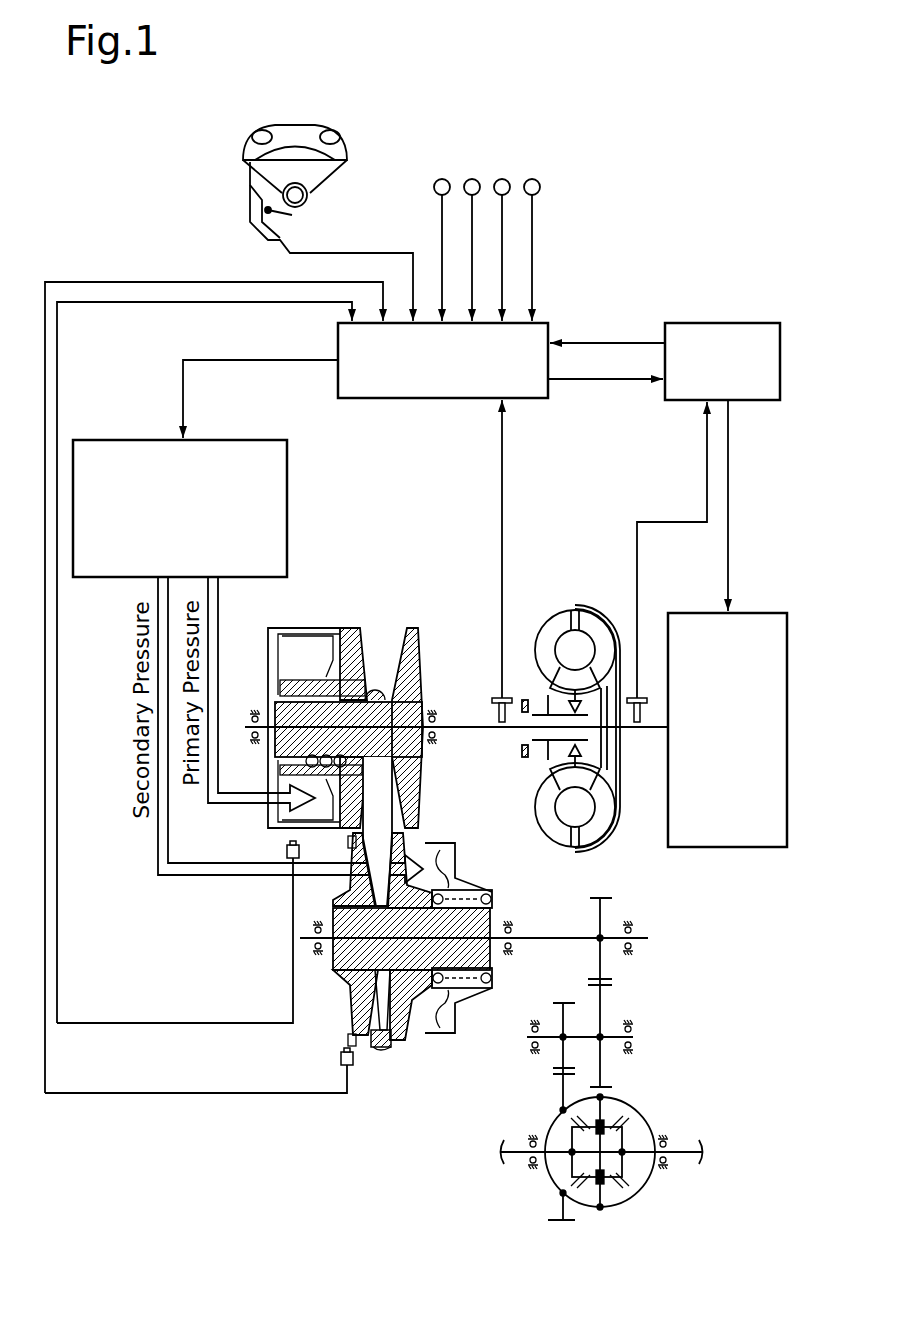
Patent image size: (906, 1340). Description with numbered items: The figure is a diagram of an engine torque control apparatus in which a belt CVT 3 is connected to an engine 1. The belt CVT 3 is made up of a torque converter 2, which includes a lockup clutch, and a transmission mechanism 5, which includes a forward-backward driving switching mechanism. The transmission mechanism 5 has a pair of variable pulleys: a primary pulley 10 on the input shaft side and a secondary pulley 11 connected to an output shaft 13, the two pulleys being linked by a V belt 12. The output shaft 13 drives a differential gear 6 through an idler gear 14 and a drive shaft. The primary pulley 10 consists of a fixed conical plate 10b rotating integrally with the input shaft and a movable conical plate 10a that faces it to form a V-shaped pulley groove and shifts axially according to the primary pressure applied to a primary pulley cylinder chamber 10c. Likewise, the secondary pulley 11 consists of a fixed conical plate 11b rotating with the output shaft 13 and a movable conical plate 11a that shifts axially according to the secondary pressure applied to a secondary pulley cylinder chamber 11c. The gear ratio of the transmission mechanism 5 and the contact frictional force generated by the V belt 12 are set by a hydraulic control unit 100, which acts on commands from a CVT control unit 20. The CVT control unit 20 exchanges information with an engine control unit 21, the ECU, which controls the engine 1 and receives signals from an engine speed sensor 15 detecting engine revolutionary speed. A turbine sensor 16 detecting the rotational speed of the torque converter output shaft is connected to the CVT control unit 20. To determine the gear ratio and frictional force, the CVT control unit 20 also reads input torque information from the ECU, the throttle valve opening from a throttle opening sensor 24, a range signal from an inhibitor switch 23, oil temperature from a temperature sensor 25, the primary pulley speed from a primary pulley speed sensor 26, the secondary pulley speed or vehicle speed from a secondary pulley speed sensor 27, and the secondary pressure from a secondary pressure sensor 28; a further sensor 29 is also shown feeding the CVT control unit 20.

The engine 1 is at (690, 613).
The torque converter 2 is at (575, 602).
The belt CVT 3 is at (461, 817).
The transmission mechanism 5 is at (340, 573).
The differential gear 6 is at (647, 1103).
The primary pulley 10 is at (361, 652).
The movable conical plate 10a is at (350, 628).
The fixed conical plate 10b is at (415, 628).
The primary pulley cylinder chamber 10c is at (307, 645).
The secondary pulley 11 is at (382, 953).
The movable conical plate 11a is at (385, 1048).
The fixed conical plate 11b is at (352, 1018).
The secondary pulley cylinder chamber 11c is at (420, 1021).
The V belt 12 is at (383, 1050).
The output shaft 13 is at (540, 935).
The idler gear 14 is at (617, 993).
The engine speed sensor 15 is at (640, 698).
The turbine sensor 16 is at (496, 698).
The CVT control unit 20 is at (549, 325).
The engine control unit 21 is at (745, 323).
The inhibitor switch 23 is at (248, 131).
The throttle opening sensor 24 is at (442, 179).
The temperature sensor 25 is at (502, 179).
The primary pulley speed sensor 26 is at (285, 850).
The secondary pulley speed sensor 27 is at (340, 1058).
The secondary pressure sensor 28 is at (472, 179).
The sensor 29 is at (532, 179).
The hydraulic control unit 100 is at (125, 440).